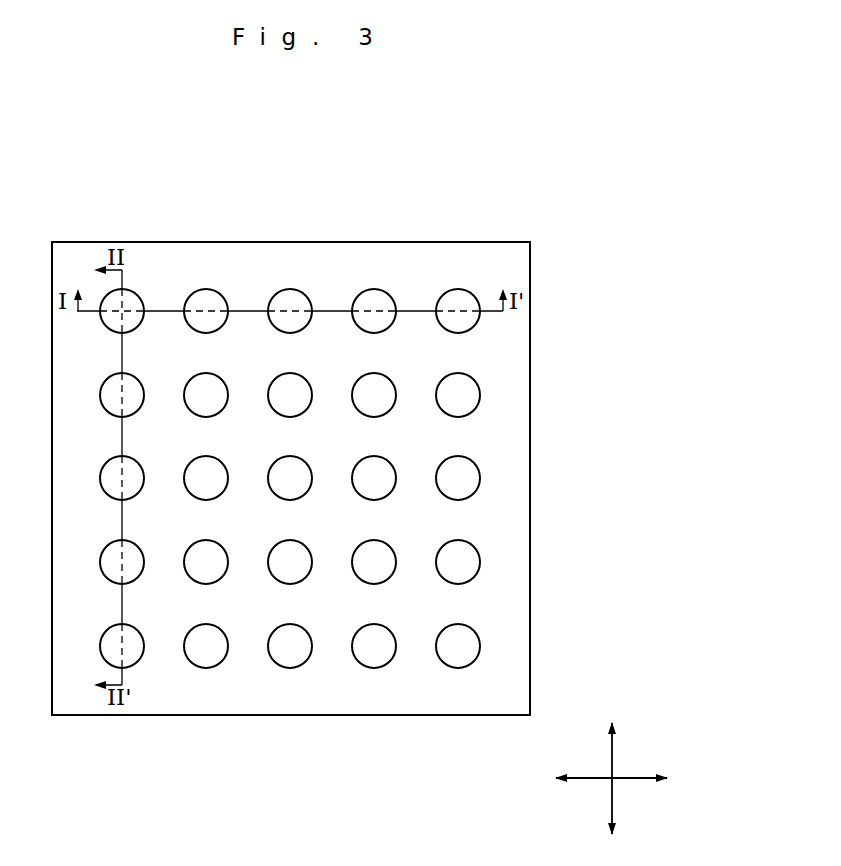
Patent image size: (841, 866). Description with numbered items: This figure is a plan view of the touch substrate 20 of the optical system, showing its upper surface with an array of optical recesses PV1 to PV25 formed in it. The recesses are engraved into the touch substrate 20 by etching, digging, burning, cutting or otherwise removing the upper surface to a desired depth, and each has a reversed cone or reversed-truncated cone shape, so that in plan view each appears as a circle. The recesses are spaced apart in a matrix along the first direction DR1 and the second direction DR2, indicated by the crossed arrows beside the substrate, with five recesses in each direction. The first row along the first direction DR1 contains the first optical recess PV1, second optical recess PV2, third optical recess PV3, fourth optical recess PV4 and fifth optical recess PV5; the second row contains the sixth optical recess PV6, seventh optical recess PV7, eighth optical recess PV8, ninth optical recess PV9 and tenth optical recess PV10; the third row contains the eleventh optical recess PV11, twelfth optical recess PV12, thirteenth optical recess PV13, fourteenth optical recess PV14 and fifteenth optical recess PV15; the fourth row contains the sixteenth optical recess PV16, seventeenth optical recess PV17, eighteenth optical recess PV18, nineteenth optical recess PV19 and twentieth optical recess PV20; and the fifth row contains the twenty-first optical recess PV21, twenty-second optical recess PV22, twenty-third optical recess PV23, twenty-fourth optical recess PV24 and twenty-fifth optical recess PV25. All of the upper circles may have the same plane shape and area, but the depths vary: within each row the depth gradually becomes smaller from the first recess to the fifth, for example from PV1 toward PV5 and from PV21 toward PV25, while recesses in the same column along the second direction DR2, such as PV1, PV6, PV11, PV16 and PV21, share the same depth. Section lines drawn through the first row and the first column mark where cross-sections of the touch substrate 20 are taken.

The touch substrate 20 is at (537, 193).
The first optical recess PV1 is at (137, 291).
The second optical recess PV2 is at (221, 291).
The third optical recess PV3 is at (305, 291).
The fourth optical recess PV4 is at (389, 291).
The fifth optical recess PV5 is at (473, 291).
The sixth optical recess PV6 is at (137, 373).
The seventh optical recess PV7 is at (221, 373).
The eighth optical recess PV8 is at (305, 373).
The ninth optical recess PV9 is at (389, 373).
The tenth optical recess PV10 is at (475, 373).
The eleventh optical recess PV11 is at (139, 456).
The twelfth optical recess PV12 is at (223, 456).
The thirteenth optical recess PV13 is at (307, 456).
The fourteenth optical recess PV14 is at (391, 456).
The fifteenth optical recess PV15 is at (475, 456).
The sixteenth optical recess PV16 is at (139, 540).
The seventeenth optical recess PV17 is at (223, 540).
The eighteenth optical recess PV18 is at (307, 540).
The nineteenth optical recess PV19 is at (391, 540).
The twentieth optical recess PV20 is at (475, 540).
The twenty-first optical recess PV21 is at (139, 624).
The twenty-second optical recess PV22 is at (223, 624).
The twenty-third optical recess PV23 is at (307, 624).
The twenty-fourth optical recess PV24 is at (391, 624).
The twenty-fifth optical recess PV25 is at (475, 624).
The first direction DR1 is at (632, 779).
The second direction DR2 is at (612, 765).